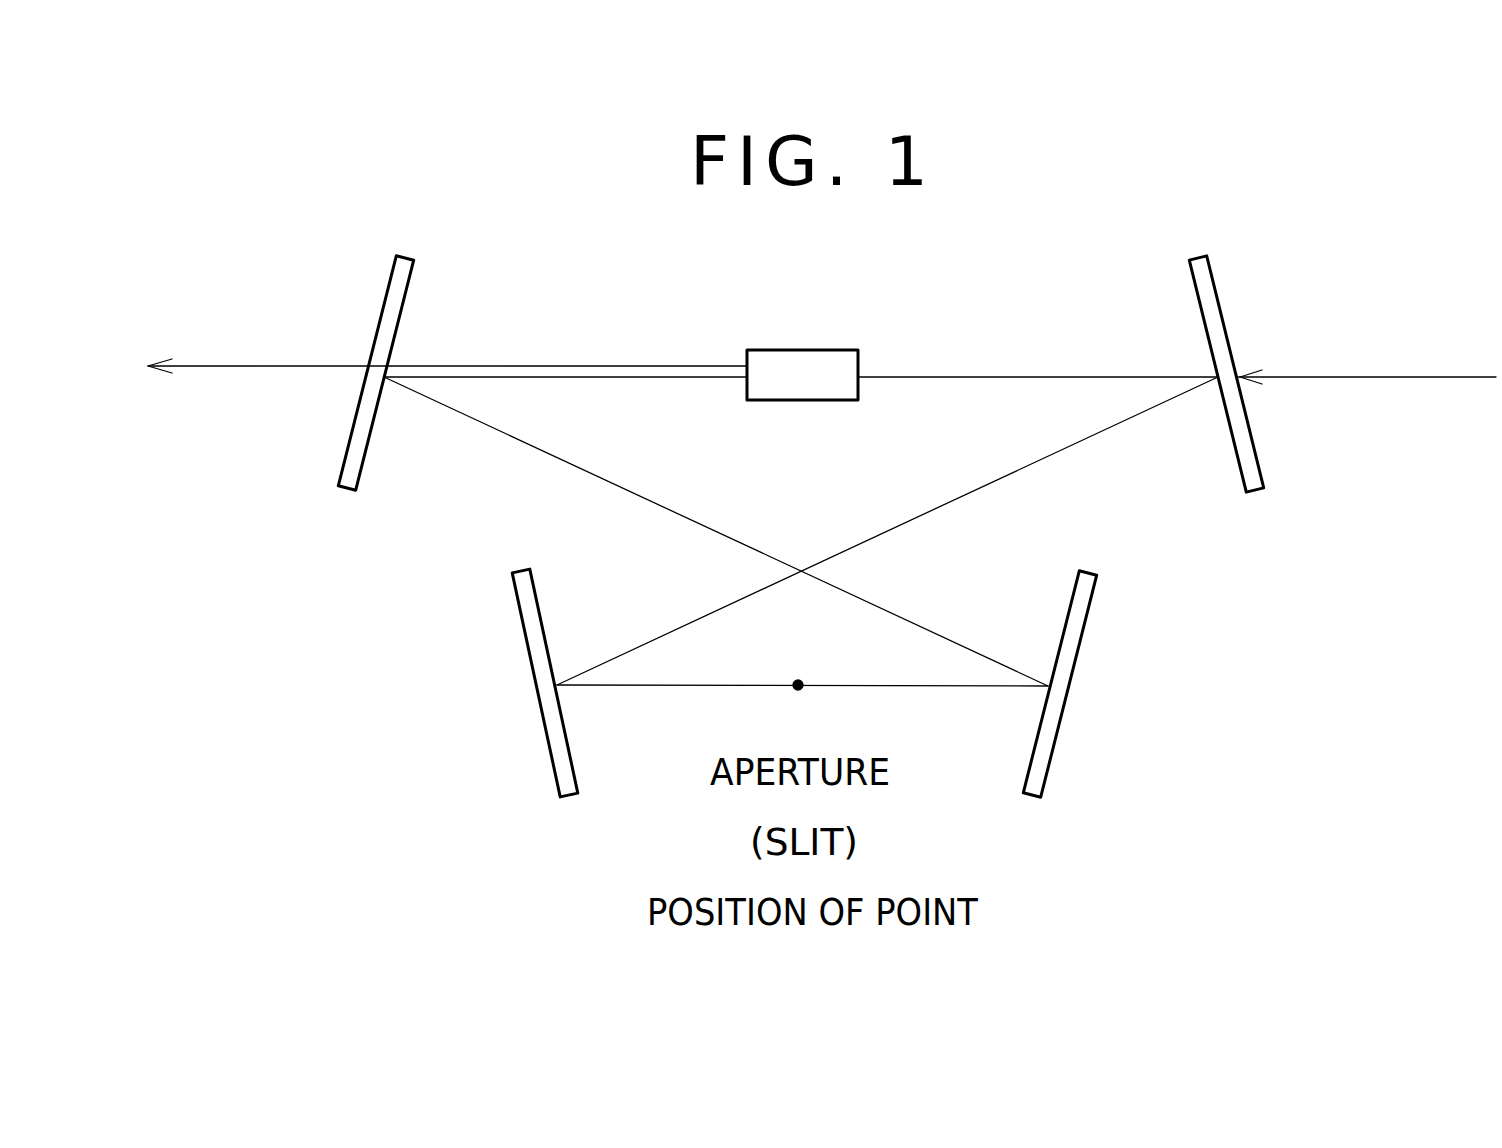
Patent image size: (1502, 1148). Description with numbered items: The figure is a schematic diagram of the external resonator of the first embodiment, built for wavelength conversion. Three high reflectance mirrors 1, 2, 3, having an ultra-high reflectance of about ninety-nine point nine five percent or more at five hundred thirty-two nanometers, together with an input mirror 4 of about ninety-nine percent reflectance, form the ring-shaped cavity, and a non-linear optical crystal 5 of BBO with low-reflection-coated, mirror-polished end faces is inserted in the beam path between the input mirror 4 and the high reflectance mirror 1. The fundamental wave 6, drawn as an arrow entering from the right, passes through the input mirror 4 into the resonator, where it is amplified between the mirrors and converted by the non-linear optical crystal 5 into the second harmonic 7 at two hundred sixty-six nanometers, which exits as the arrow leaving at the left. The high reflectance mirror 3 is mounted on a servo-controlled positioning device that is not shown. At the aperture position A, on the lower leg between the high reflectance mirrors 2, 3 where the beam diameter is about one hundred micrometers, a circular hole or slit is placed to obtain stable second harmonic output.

The high reflectance mirror 1 is at (403, 306).
The high reflectance mirror 2 is at (548, 740).
The high reflectance mirror 3 is at (1058, 730).
The input mirror 4 is at (1197, 306).
The non-linear optical crystal 5 is at (803, 350).
The fundamental wave 6 is at (1396, 377).
The second harmonic 7 is at (272, 366).
The aperture position A is at (797, 710).